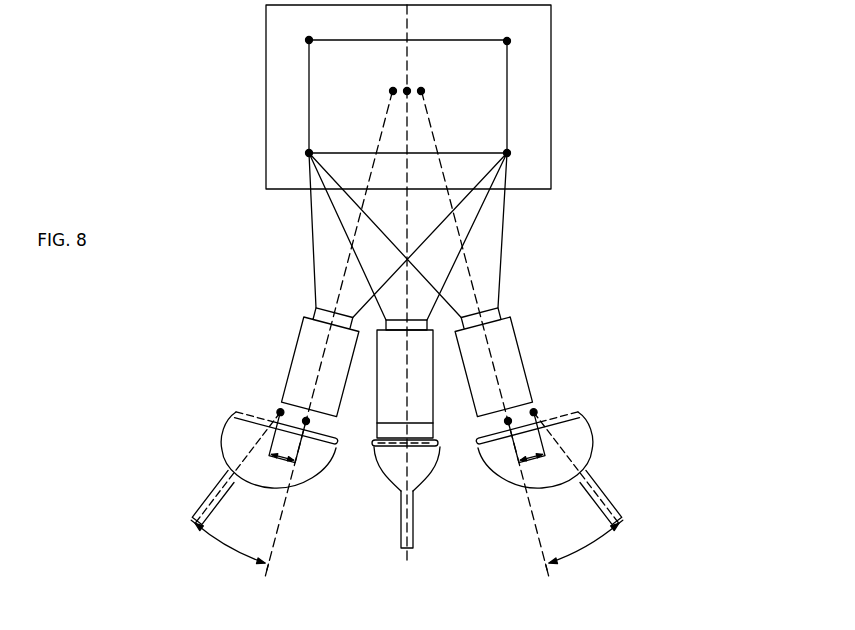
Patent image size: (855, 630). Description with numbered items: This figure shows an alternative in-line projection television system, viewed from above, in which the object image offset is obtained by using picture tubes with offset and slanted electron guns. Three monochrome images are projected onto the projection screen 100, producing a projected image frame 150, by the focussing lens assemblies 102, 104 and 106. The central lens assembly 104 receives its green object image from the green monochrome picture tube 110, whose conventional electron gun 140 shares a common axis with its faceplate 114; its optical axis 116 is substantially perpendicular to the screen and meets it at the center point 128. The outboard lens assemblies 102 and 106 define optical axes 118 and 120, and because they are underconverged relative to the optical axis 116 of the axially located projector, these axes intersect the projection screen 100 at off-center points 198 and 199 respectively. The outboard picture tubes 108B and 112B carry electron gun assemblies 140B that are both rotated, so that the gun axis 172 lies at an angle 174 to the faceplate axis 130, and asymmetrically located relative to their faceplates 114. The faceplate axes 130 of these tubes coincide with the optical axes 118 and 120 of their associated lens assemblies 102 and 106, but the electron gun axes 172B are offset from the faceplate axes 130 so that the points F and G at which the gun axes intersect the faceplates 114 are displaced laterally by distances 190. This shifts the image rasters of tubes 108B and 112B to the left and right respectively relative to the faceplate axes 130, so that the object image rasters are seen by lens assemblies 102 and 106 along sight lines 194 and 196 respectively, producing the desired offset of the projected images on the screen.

The projection screen 100 is at (552, 78).
The projected image frame 150 is at (312, 99).
The off-center point 198 is at (390, 88).
The center point of screen 128 is at (409, 88).
The off-center point 199 is at (425, 91).
The optical axis 116 is at (409, 200).
The optical axis 118 is at (344, 273).
The optical axis 120 is at (470, 272).
The focussing lens assembly 102 is at (300, 333).
The focussing lens assembly 104 is at (376, 408).
The focussing lens assembly 106 is at (515, 333).
The faceplate 114 is at (334, 450).
The sight line 194 is at (252, 411).
The sight line 196 is at (560, 408).
The lateral offset distance 190 is at (280, 465).
The outboard picture tube 108B is at (219, 449).
The outboard picture tube 112B is at (596, 449).
The electron gun assembly 140B is at (212, 500).
The electron gun axis 172 is at (190, 522).
The electron gun axis 172B is at (627, 523).
The angle 174 is at (222, 545).
The faceplate axis 130 is at (275, 571).
The green monochrome picture tube 110 is at (422, 534).
The electron gun 140 is at (416, 550).